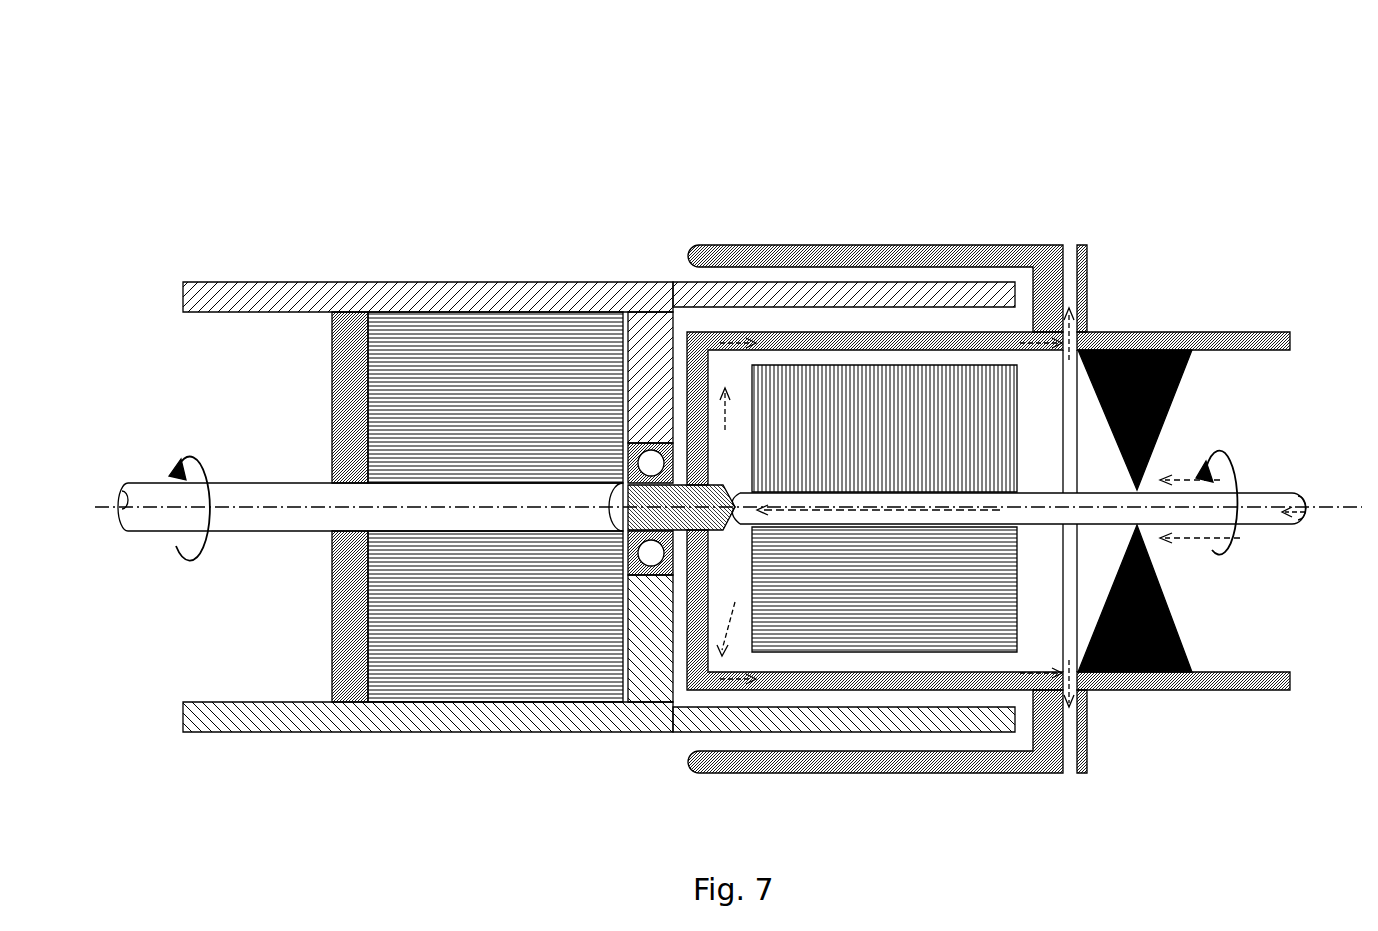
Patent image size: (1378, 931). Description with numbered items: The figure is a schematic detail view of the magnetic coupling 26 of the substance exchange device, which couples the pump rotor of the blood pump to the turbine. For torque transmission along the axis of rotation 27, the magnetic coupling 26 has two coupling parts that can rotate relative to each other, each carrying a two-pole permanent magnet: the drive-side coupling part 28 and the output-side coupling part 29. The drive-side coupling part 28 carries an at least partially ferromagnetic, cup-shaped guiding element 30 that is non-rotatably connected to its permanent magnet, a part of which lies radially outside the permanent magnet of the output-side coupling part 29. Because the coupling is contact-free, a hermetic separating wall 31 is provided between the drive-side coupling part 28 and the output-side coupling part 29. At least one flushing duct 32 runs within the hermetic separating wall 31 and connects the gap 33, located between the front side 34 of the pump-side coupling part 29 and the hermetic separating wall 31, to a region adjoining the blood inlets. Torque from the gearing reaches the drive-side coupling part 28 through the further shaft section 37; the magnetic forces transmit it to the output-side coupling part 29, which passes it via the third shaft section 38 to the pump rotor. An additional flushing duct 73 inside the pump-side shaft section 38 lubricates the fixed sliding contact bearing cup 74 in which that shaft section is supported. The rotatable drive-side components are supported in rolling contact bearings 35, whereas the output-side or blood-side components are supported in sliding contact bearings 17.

The sliding contact bearing 17 is at (1140, 380).
The magnetic coupling 26 is at (742, 243).
The axis of rotation 27 is at (97, 507).
The drive-side coupling part 28 is at (453, 282).
The output-side coupling part 29 is at (830, 365).
The cup-shaped guiding element 30 is at (956, 285).
The hermetic separating wall 31 is at (700, 345).
The flushing duct 32 is at (1060, 692).
The gap 33 is at (752, 573).
The front side 34 is at (733, 602).
The rolling contact bearing 35 is at (651, 463).
The further shaft section 37 is at (260, 490).
The third shaft section 38 is at (1285, 495).
The additional flushing duct 73 is at (1170, 507).
The fixed sliding contact bearing cup 74 is at (735, 510).